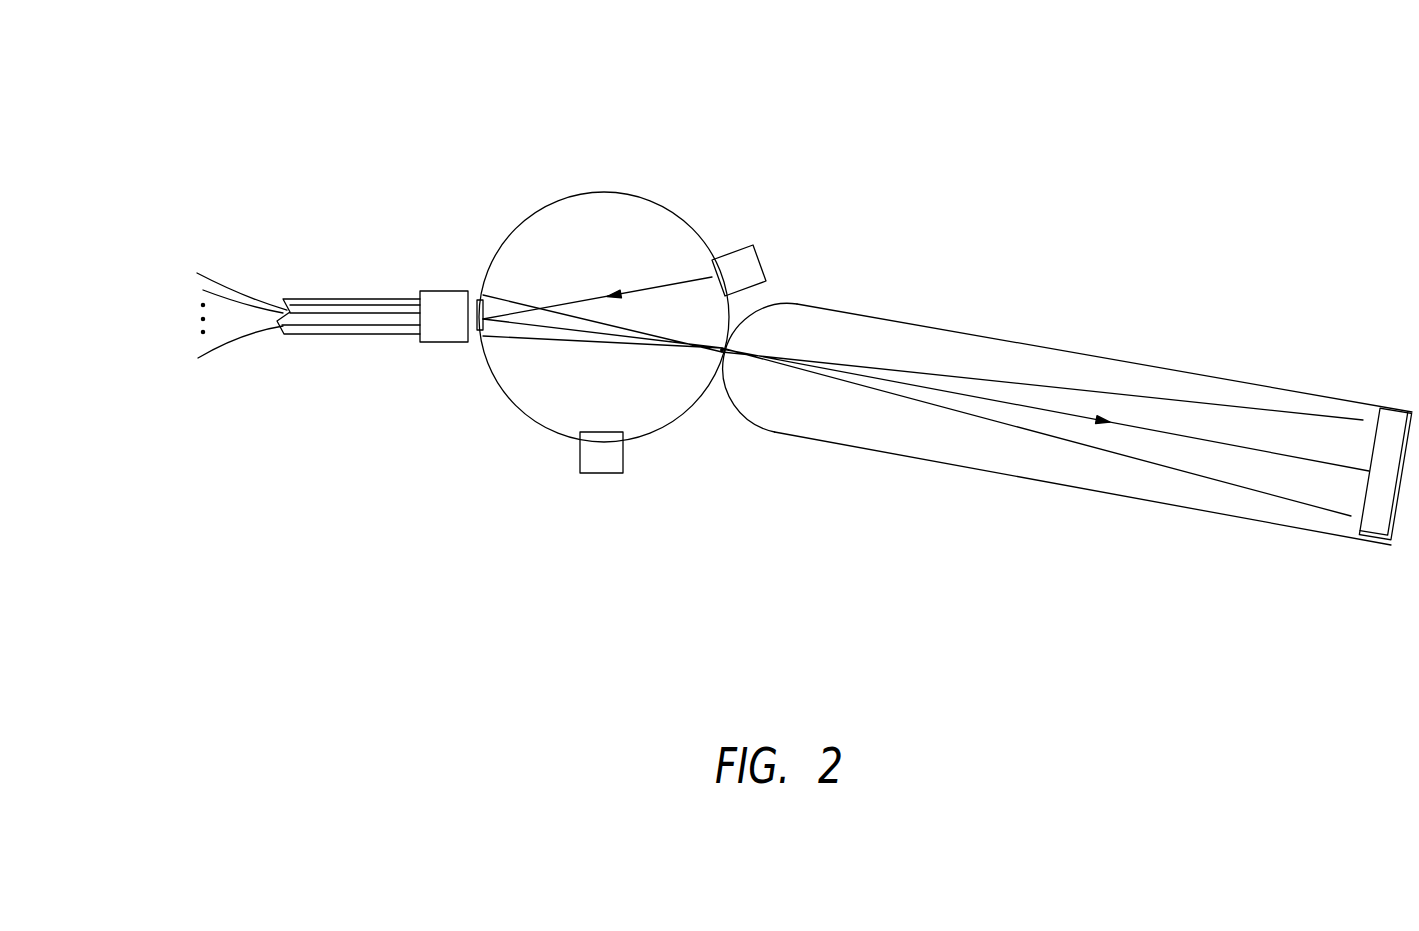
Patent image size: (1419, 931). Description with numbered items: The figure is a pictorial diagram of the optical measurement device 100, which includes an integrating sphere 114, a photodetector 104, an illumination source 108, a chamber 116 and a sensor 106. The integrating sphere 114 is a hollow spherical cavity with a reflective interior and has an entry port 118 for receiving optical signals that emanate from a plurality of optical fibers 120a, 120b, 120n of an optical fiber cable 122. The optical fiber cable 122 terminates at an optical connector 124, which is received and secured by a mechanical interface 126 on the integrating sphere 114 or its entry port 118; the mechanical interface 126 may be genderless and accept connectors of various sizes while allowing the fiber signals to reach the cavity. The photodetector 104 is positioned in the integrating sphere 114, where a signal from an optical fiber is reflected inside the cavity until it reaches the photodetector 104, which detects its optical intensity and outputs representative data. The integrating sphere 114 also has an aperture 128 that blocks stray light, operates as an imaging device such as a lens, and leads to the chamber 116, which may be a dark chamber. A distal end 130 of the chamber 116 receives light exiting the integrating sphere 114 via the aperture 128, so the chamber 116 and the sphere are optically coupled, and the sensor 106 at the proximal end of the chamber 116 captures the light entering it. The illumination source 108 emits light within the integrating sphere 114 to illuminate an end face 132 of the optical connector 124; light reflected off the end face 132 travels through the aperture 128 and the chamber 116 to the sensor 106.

The optical measurement device 100 is at (984, 80).
The photodetector 104 is at (602, 474).
The sensor 106 is at (1378, 518).
The illumination source 108 is at (714, 262).
The integrating sphere 114 is at (604, 192).
The chamber 116 is at (1105, 360).
The entry port 118 is at (481, 299).
The optical fiber 120a is at (228, 290).
The optical fiber 120b is at (198, 299).
The optical fiber 120n is at (228, 340).
The optical fiber cable 122 is at (348, 298).
The optical connector 124 is at (440, 291).
The mechanical interface 126 is at (478, 334).
The aperture 128 is at (701, 371).
The distal end 130 is at (749, 387).
The end face 132 is at (1354, 433).